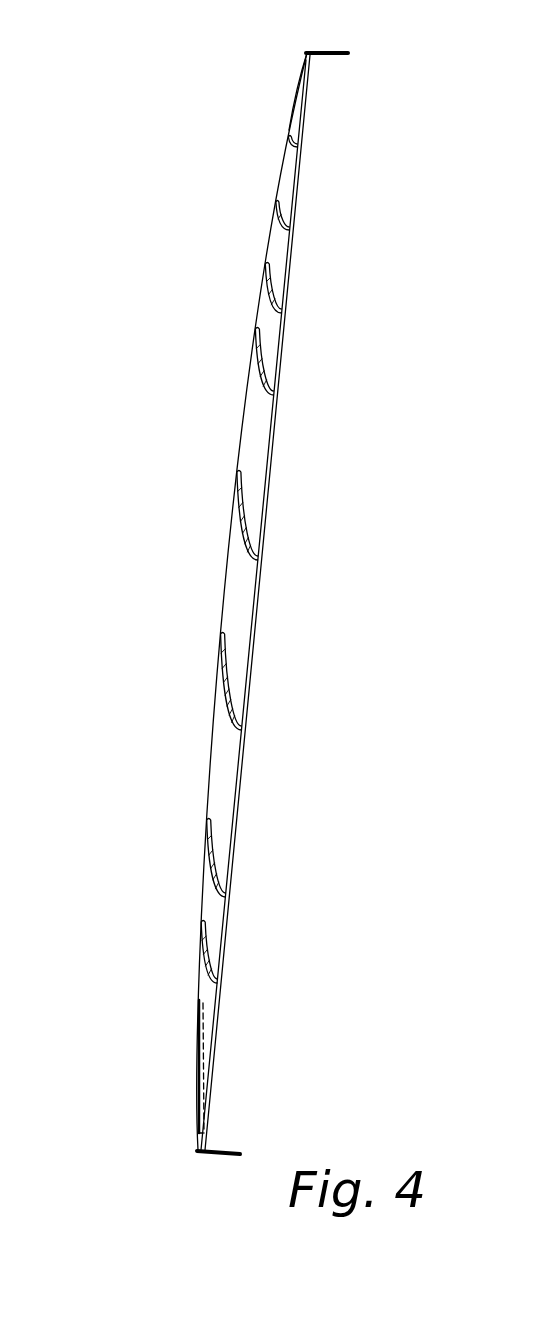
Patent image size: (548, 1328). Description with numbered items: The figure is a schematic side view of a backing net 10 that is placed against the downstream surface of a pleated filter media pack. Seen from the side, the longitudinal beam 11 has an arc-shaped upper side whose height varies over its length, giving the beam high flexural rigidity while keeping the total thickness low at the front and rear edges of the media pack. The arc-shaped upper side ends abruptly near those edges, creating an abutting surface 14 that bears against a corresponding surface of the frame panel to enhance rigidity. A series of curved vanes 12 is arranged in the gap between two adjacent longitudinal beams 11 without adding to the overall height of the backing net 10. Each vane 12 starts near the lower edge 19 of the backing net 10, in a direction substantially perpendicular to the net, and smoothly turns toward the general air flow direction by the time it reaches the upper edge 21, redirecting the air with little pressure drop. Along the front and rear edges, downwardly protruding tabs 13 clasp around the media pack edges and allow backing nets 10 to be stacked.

The backing net 10 is at (128, 457).
The longitudinal beam 11 is at (220, 793).
The vane 12 is at (218, 670).
The downwardly protruding tab 13 is at (343, 56).
The abutting surface 14 is at (300, 77).
The lower edge 19 is at (272, 450).
The upper edge 21 is at (230, 548).